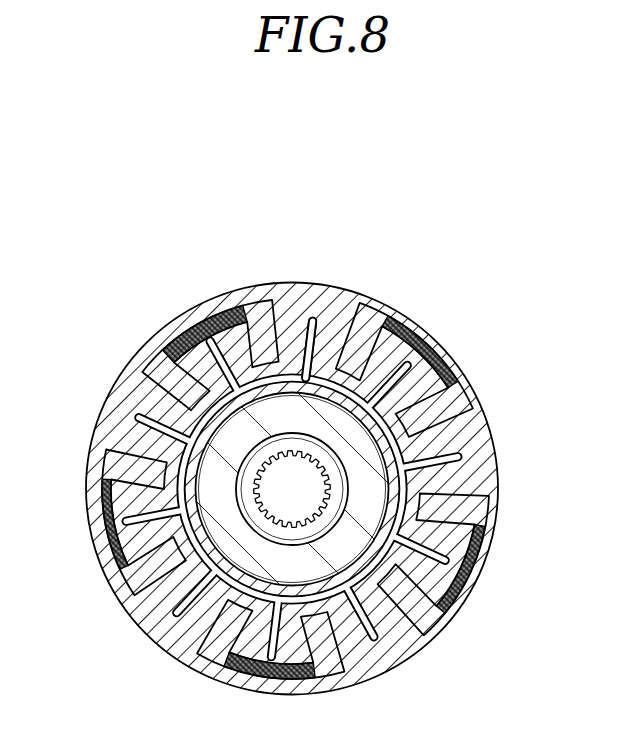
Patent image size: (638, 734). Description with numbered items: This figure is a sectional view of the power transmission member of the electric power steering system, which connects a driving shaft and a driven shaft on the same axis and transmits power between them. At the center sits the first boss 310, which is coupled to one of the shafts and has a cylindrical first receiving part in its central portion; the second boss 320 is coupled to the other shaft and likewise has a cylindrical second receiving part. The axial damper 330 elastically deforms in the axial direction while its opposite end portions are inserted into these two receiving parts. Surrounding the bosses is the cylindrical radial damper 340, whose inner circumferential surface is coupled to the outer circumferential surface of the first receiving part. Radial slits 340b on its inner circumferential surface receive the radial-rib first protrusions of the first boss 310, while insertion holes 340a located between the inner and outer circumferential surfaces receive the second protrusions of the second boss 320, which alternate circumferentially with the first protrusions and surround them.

The first boss 310 is at (148, 421).
The second boss 320 is at (275, 334).
The axial damper 330 is at (230, 543).
The radial damper 340 is at (387, 643).
The insertion holes 340a is at (203, 322).
The radial slits 340b is at (315, 326).